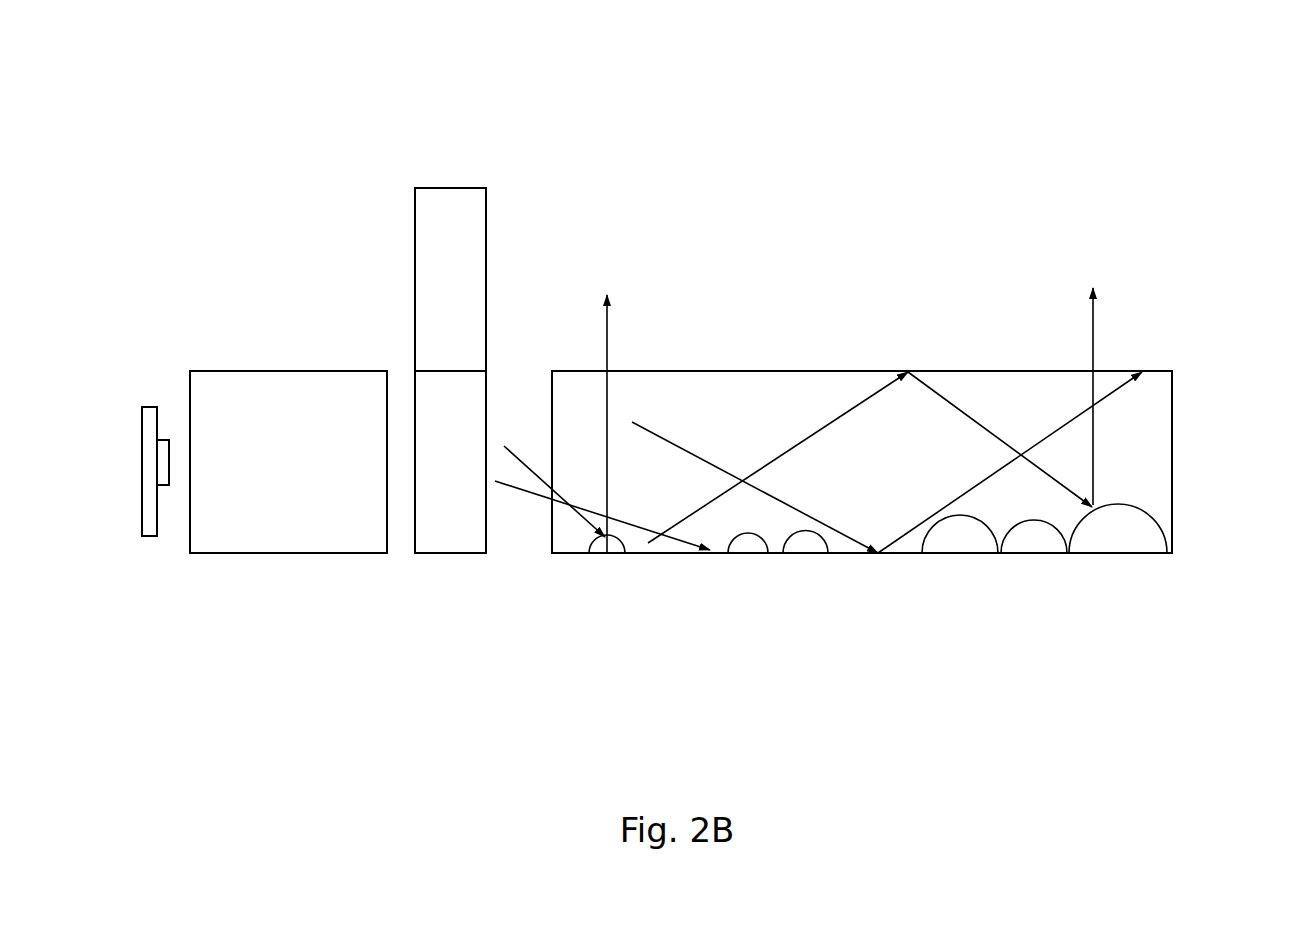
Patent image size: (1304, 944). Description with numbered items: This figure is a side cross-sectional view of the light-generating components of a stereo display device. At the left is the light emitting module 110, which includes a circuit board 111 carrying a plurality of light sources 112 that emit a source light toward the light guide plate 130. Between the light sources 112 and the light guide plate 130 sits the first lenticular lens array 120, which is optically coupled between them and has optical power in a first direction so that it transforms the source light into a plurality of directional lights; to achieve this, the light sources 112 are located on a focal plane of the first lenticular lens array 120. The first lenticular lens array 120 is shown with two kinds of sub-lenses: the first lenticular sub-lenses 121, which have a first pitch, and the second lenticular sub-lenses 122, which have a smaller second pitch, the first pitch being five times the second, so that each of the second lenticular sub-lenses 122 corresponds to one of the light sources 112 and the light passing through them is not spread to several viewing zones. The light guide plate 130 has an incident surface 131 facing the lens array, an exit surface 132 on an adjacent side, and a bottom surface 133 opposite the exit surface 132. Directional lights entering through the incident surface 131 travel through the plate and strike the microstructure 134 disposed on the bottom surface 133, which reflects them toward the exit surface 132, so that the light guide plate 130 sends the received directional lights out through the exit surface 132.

The light emitting module 110 is at (230, 283).
The circuit board 111 is at (150, 405).
The light sources 112 is at (163, 438).
The first lenticular lens array 120 is at (582, 102).
The first lenticular sub-lenses 121 is at (463, 410).
The second lenticular sub-lenses 122 is at (450, 208).
The light guide plate 130 is at (1150, 433).
The incident surface 131 is at (548, 533).
The exit surface 132 is at (743, 370).
The bottom surface 133 is at (670, 555).
The microstructure 134 is at (747, 544).